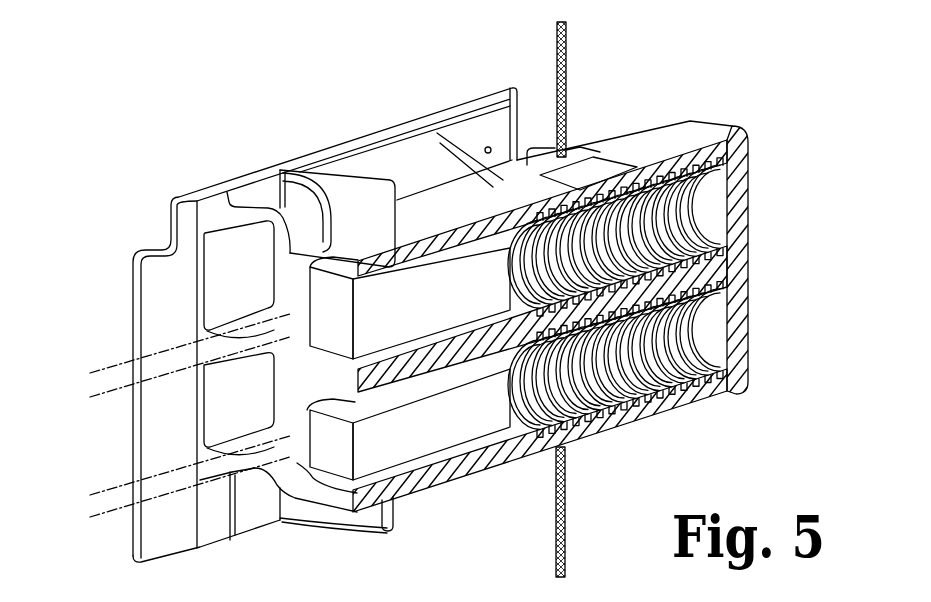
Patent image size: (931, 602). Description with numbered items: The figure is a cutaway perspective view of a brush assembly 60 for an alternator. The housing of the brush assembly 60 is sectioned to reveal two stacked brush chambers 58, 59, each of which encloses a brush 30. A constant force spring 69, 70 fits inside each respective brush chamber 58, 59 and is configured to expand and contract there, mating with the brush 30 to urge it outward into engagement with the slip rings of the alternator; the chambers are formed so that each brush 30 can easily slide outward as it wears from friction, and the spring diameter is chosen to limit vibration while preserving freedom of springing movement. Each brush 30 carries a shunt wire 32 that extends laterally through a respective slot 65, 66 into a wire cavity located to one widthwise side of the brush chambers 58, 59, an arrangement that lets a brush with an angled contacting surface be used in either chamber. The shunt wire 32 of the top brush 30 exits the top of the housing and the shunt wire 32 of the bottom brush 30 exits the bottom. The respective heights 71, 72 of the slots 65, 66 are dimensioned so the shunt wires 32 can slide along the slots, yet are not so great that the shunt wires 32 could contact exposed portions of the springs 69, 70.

The brush assembly 60 is at (125, 158).
The shunt wires 32 is at (569, 34).
The brush chamber 58 is at (708, 201).
The brush chamber 59 is at (707, 322).
The constant force spring 69 is at (680, 209).
The constant force spring 70 is at (680, 332).
The brush 30 is at (431, 321).
The slot 65 is at (272, 318).
The slot 66 is at (272, 437).
The height 71 is at (106, 397).
The height 72 is at (106, 517).